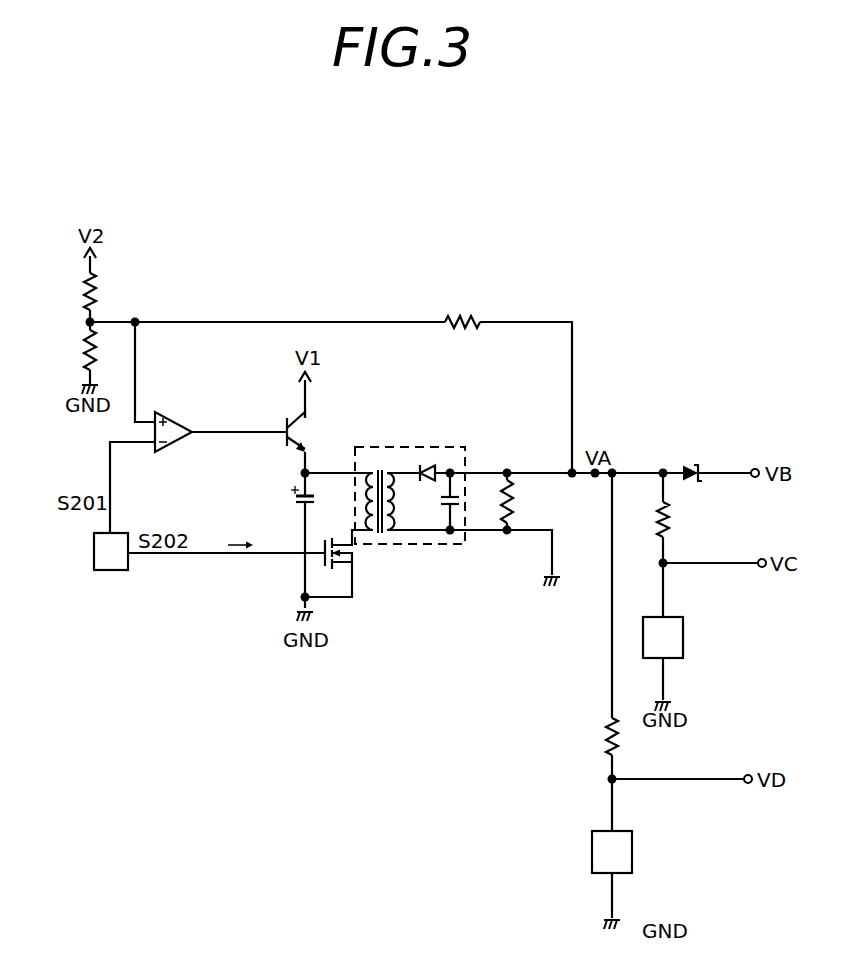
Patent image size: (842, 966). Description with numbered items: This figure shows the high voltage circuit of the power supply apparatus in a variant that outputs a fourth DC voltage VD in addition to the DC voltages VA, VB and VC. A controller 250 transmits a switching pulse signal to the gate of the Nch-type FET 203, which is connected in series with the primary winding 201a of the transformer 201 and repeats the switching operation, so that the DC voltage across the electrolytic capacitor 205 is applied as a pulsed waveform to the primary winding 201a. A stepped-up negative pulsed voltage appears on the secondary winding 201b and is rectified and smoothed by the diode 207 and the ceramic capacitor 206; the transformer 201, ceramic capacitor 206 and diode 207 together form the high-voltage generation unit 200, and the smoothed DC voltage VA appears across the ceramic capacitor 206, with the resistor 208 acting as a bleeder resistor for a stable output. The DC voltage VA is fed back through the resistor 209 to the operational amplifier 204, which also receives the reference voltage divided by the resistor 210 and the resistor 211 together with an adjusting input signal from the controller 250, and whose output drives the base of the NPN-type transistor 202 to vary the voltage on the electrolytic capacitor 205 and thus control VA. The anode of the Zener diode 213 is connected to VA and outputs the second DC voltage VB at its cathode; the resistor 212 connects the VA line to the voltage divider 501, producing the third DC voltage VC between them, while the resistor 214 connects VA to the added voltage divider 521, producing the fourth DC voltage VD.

The high-voltage generation unit 200 is at (464, 546).
The transformer 201 is at (394, 449).
The primary winding 201a is at (366, 482).
The secondary winding 201b is at (392, 482).
The NPN-type transistor 202 is at (283, 420).
The Nch-type FET 203 is at (352, 563).
The operational amplifier 204 is at (170, 416).
The electrolytic capacitor 205 is at (294, 498).
The ceramic capacitor 206 is at (446, 508).
The diode 207 is at (432, 465).
The resistor 208 is at (509, 483).
The resistor 209 is at (465, 315).
The resistor 210 is at (86, 288).
The resistor 211 is at (86, 350).
The resistor 212 is at (668, 522).
The Zener diode 213 is at (687, 467).
The resistor 214 is at (618, 745).
The controller 250 is at (94, 556).
The voltage divider 501 is at (686, 640).
The voltage divider 521 is at (590, 850).